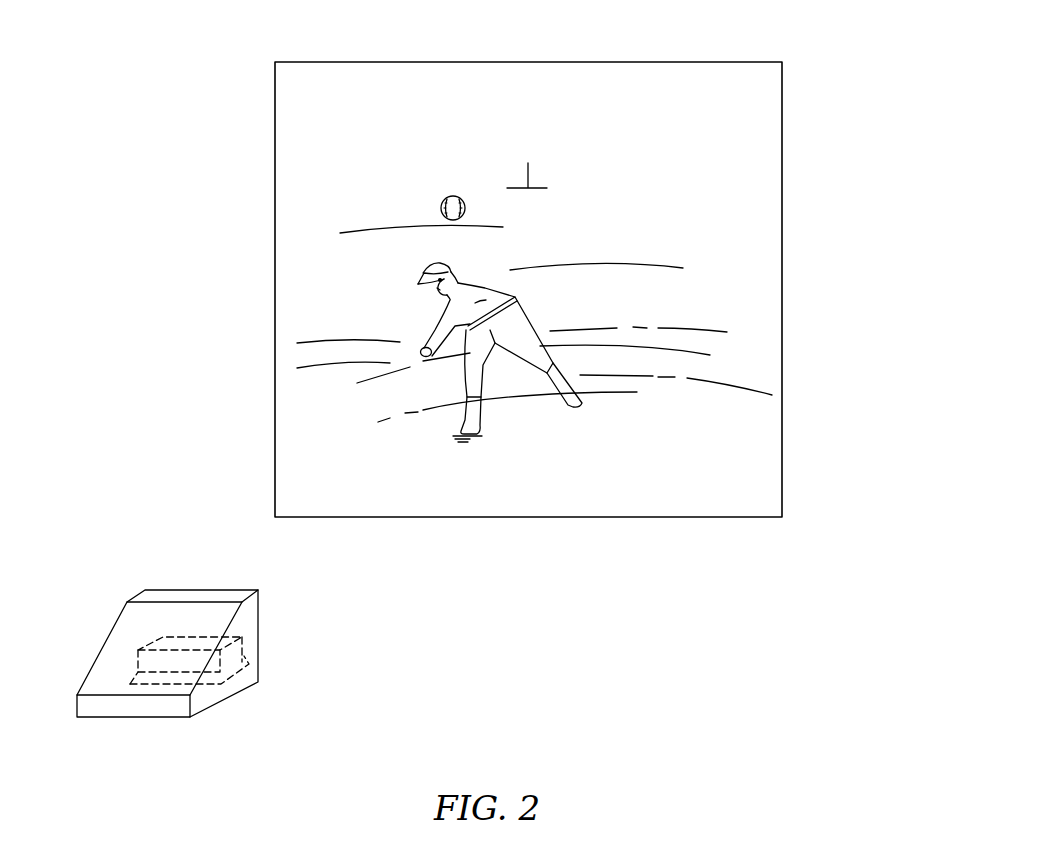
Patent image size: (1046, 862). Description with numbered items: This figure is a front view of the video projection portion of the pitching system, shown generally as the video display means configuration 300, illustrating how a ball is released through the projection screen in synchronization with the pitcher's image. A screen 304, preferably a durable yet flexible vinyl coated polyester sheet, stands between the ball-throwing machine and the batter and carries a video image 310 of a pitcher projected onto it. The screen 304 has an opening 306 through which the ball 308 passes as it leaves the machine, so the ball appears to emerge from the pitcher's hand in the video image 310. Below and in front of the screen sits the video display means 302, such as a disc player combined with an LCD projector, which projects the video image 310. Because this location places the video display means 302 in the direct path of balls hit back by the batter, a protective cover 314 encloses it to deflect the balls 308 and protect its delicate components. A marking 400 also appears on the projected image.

The video display means configuration 300 is at (806, 390).
The screen 304 is at (415, 78).
The opening 306 is at (528, 178).
The ball 308 is at (452, 196).
The video image 310 is at (573, 407).
The pitch speed indicator 400 is at (548, 251).
The protective cover 314 is at (117, 623).
The video display means 302 is at (229, 677).